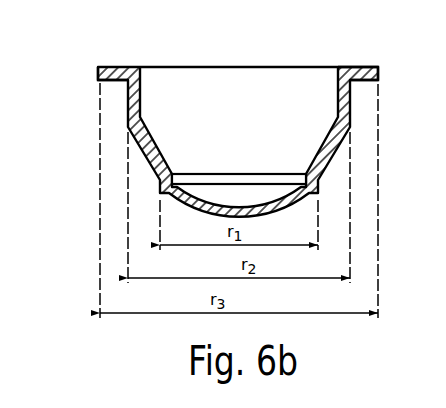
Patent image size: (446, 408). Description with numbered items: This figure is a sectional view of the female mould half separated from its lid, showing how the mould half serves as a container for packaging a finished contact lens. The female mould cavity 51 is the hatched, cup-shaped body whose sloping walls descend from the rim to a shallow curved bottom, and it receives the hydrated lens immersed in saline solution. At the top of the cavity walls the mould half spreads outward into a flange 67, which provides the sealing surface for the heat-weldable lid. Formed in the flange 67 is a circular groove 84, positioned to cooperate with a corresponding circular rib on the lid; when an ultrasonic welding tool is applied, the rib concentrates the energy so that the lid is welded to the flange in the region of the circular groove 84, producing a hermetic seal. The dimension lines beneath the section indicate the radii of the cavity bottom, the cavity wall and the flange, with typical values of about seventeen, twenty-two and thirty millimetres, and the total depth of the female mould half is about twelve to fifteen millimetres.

The female mould cavity 51 is at (150, 158).
The flange 67 is at (376, 66).
The circular groove 84 is at (97, 81).